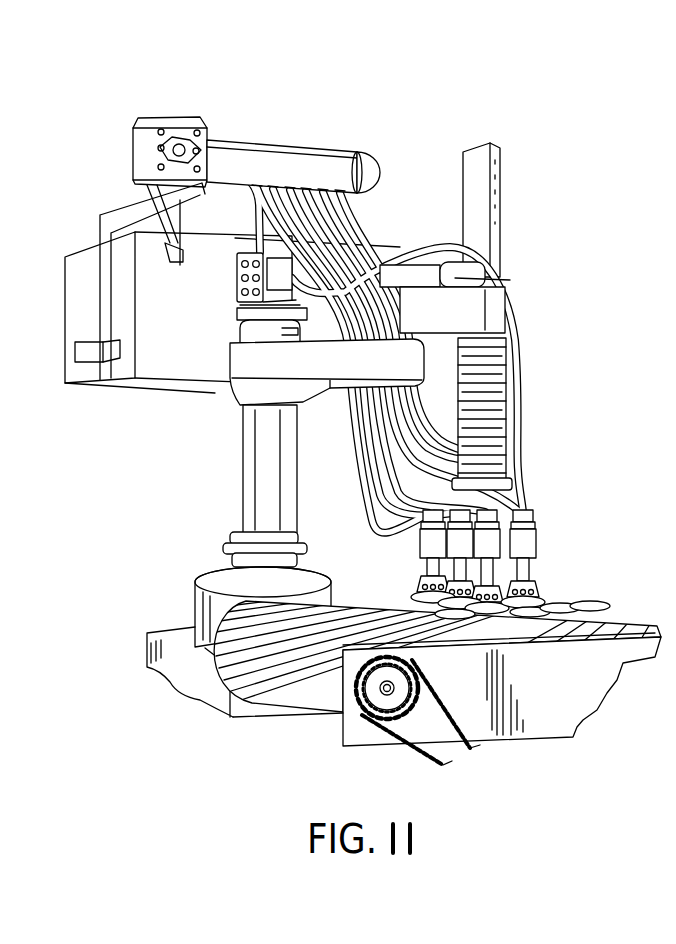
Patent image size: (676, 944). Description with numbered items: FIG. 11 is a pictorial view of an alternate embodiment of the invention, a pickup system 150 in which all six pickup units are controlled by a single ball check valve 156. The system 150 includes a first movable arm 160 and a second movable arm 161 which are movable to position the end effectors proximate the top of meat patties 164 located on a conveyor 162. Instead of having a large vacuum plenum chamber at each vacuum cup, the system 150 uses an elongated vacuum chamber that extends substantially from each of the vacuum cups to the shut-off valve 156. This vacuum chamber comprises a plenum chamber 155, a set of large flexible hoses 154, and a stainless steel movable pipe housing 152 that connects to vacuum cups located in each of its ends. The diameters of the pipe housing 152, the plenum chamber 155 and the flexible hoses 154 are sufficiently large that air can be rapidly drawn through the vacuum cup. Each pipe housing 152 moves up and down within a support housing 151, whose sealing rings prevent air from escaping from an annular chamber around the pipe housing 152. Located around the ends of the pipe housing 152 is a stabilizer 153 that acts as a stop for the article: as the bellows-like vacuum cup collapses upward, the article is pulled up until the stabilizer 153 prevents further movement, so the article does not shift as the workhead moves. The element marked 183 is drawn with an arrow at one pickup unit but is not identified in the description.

The automated capping station 150 is at (414, 152).
The nozzle 151 is at (521, 538).
The nozzle mounting foot 152 is at (533, 567).
The suction cup 153 is at (537, 590).
The flexible conduit 154 is at (510, 478).
The manifold 155 is at (272, 158).
The valve box 156 is at (178, 124).
The actuator housing 160 is at (477, 308).
The robot arm 161 is at (239, 365).
The conveyor 162 is at (303, 660).
The container lids 164 is at (586, 602).
The pick-up head 183 is at (540, 544).